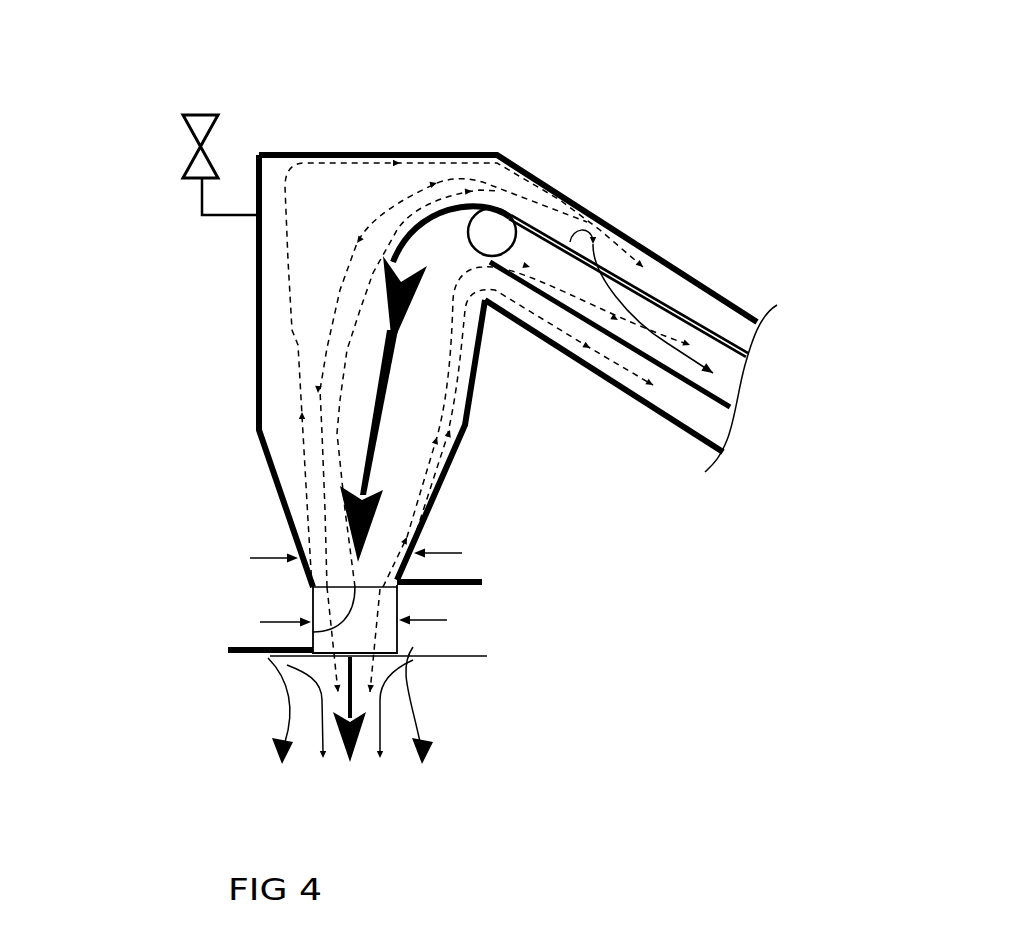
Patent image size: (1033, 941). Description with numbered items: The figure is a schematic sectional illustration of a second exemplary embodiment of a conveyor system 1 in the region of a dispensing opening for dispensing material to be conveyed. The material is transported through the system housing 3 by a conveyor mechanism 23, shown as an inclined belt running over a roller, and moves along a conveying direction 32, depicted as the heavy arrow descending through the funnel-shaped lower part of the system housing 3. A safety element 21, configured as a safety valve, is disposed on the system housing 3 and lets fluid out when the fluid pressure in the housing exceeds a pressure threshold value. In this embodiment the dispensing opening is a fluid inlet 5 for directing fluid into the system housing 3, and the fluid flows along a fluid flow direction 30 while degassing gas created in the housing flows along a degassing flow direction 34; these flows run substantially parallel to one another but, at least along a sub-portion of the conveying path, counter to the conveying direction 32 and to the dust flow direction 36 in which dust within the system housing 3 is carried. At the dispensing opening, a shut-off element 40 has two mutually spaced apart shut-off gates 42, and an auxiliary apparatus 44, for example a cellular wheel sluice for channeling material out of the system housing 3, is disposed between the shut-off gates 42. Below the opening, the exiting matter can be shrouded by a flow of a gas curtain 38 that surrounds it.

The conveyor system 1 is at (360, 115).
The safety element 21 is at (190, 138).
The system housing 3 is at (667, 258).
The conveyor mechanism 23 is at (703, 323).
The conveying direction 32 is at (372, 407).
The dust flow direction 36 is at (327, 335).
The fluid flow direction 30 is at (327, 430).
The degassing flow direction 34 is at (693, 363).
The auxiliary apparatus 44 is at (313, 605).
The fluid inlet 5 is at (313, 632).
The shut-off element 40 is at (492, 582).
The shut-off gates 42 is at (462, 587).
The gas curtain 38 is at (288, 722).